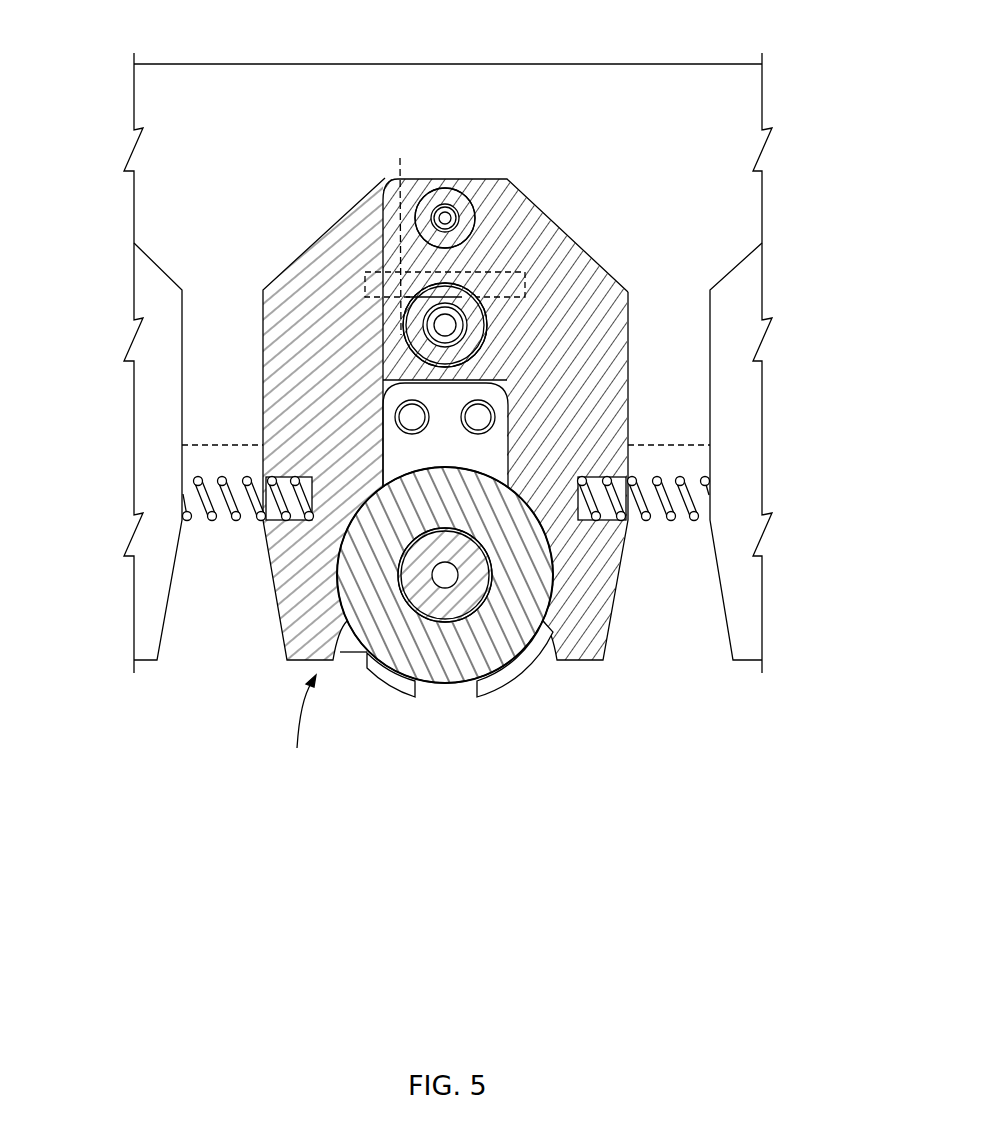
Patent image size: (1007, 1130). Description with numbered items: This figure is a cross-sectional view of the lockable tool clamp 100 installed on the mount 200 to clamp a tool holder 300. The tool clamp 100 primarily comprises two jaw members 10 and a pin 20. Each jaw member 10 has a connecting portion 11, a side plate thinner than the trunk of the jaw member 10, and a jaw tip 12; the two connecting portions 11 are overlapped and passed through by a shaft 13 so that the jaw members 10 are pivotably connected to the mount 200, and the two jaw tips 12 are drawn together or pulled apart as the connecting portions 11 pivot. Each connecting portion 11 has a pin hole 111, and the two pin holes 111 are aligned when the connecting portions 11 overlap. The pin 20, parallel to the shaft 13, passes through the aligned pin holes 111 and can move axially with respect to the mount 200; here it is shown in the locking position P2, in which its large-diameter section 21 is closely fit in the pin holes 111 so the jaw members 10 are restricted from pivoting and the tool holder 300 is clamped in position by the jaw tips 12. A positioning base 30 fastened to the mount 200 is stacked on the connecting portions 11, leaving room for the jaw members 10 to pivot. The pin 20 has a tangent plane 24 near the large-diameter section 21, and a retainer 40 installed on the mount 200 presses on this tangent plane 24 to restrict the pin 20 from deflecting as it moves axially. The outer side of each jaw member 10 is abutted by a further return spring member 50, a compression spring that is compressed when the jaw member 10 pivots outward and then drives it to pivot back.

The mount 200 is at (658, 85).
The lockable tool clamp 100 is at (446, 436).
The jaw member 10 is at (290, 293).
The connecting portion 11 is at (477, 183).
The pin hole 111 is at (477, 330).
The jaw tip 12 is at (592, 610).
The shaft 13 is at (438, 197).
The pin 20 is at (391, 333).
The large-diameter section 21 is at (413, 327).
The tangent plane 24 is at (461, 297).
The positioning base 30 is at (503, 430).
The retainer 40 is at (397, 234).
The further return spring member 50 is at (198, 517).
The tool holder 300 is at (455, 658).
The locking position P2 is at (300, 729).